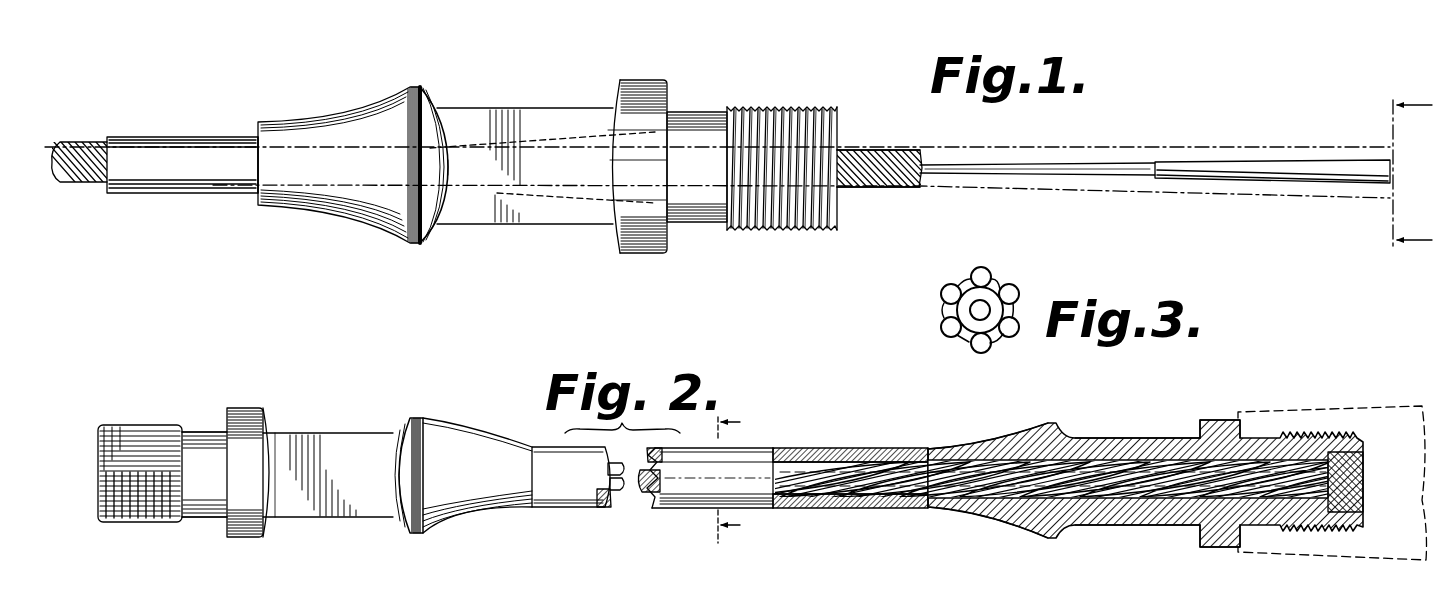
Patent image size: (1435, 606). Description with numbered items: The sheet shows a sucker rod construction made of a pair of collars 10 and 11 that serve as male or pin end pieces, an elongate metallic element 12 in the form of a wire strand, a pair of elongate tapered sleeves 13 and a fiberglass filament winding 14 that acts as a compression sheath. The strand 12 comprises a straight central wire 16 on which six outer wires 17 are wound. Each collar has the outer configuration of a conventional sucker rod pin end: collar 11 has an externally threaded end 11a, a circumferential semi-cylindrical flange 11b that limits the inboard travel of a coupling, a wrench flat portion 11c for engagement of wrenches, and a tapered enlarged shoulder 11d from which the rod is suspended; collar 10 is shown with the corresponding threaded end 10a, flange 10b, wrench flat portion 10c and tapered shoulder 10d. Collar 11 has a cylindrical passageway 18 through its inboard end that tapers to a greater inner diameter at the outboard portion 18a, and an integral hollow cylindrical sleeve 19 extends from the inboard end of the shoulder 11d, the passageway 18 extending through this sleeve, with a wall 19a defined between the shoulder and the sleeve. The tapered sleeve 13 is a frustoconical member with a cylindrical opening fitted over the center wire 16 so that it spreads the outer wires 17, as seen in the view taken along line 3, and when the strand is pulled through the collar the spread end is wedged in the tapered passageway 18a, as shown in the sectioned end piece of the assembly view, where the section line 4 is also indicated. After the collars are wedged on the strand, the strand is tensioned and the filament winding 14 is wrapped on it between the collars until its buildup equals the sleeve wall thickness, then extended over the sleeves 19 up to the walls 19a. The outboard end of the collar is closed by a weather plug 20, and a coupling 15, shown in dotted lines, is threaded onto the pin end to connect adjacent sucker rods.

In FIG. 2, the collar 10 is at (308, 410).
In FIG. 2, the externally threaded end of collar 10a is at (160, 425).
In FIG. 2, the circumferential flange of collar 10b is at (237, 538).
In FIG. 2, the wrench flat portion of collar 10c is at (365, 506).
In FIG. 2, the tapered enlarged shoulder of collar 10d is at (410, 420).
In FIG. 1, the collar 11 is at (478, 97).
In FIG. 2, the collar 11 is at (1140, 420).
In FIG. 1, the externally threaded end 11a is at (785, 110).
In FIG. 1, the circumferential semi-cylindrical flange 11b is at (632, 86).
In FIG. 2, the circumferential semi-cylindrical flange 11b is at (1222, 548).
In FIG. 1, the wrench flat portion 11c is at (567, 118).
In FIG. 2, the wrench flat portion 11c is at (1172, 527).
In FIG. 1, the tapered enlarged shoulder 11d is at (413, 248).
In FIG. 2, the tapered enlarged shoulder 11d is at (1048, 423).
In FIG. 1, the elongate metallic element 12 is at (918, 142).
In FIG. 2, the elongate metallic element 12 is at (793, 467).
In FIG. 1, the elongate tapered sleeve 13 is at (1278, 178).
In FIG. 2, the elongate tapered sleeve 13 is at (1142, 505).
In FIG. 2, the fiberglass filament winding 14 is at (770, 432).
In FIG. 2, the coupling 15 is at (1305, 410).
In FIG. 1, the central wire 16 is at (1040, 165).
In FIG. 1, the outer wires 17 is at (905, 170).
In FIG. 1, the cylindrical passageway 18 is at (342, 147).
In FIG. 3, the cylindrical passageway 18 is at (980, 310).
In FIG. 2, the cylindrical passageway 18 is at (990, 498).
In FIG. 1, the tapered passageway portion 18a is at (703, 215).
In FIG. 2, the tapered passageway portion 18a is at (1165, 440).
In FIG. 1, the cylindrical sleeve 19 is at (193, 146).
In FIG. 2, the cylindrical sleeve 19 is at (869, 448).
In FIG. 1, the wall 19a is at (255, 200).
In FIG. 2, the wall 19a is at (918, 508).
In FIG. 2, the weather plug 20 is at (1366, 485).
In FIG. 1, the section line 3— 3 is at (1397, 174).
In FIG. 2, the section line 4— 4 is at (717, 477).